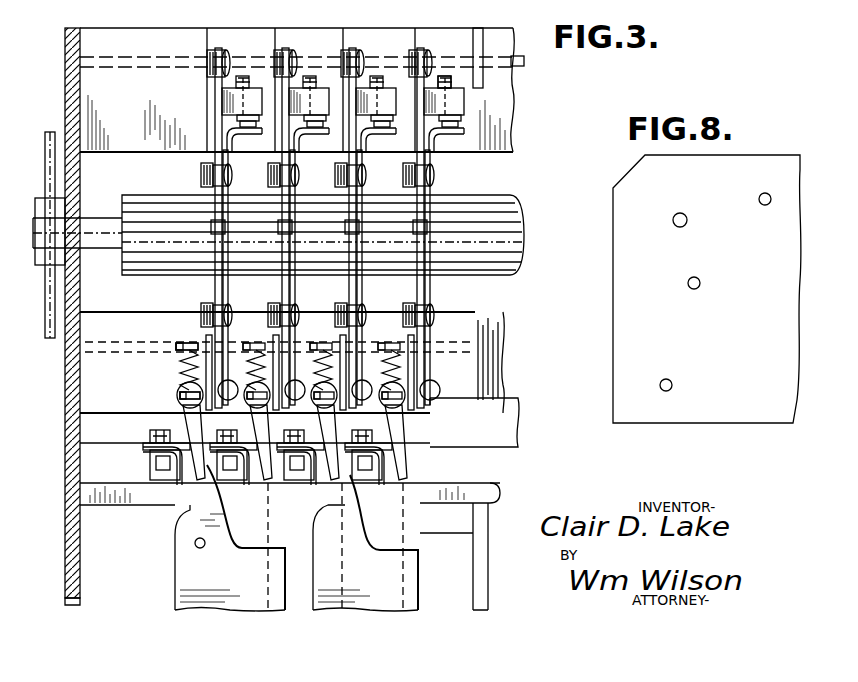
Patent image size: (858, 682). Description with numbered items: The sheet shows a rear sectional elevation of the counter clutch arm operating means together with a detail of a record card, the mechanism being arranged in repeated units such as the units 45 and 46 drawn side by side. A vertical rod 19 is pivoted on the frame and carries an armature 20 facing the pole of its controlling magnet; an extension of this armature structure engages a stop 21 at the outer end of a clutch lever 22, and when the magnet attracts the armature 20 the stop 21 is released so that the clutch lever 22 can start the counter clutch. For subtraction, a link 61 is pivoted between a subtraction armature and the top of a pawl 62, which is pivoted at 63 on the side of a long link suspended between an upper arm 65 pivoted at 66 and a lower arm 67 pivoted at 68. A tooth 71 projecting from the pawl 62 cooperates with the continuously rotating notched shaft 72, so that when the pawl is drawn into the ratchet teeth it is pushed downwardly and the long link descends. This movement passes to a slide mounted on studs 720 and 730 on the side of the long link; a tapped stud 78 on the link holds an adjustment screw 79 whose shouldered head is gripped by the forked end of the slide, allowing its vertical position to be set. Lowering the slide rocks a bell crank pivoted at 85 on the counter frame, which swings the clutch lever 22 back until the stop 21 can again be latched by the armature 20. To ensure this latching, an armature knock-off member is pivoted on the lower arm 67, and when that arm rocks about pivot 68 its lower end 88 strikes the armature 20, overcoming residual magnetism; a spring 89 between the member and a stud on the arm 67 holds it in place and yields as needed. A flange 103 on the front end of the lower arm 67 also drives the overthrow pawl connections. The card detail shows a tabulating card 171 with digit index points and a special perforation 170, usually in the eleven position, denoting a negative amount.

In FIG. 3, the vertical rod 19 is at (284, 592).
In FIG. 3, the armature 20 is at (180, 563).
In FIG. 3, the stop 21 is at (157, 458).
In FIG. 3, the clutch lever 22 is at (143, 445).
In FIG. 3, the column unit 45 is at (341, 38).
In FIG. 3, the column unit 46 is at (417, 38).
In FIG. 3, the link 61 is at (203, 172).
In FIG. 3, the pawl 62 is at (207, 285).
In FIG. 3, the pivot 63 is at (200, 318).
In FIG. 3, the upper arm 65 is at (210, 56).
In FIG. 3, the pivot rod 66 is at (524, 60).
In FIG. 3, the lower arm 67 is at (417, 410).
In FIG. 3, the pivot rod 68 is at (472, 347).
In FIG. 3, the tooth 71 is at (210, 230).
In FIG. 3, the notched shaft 72 is at (525, 206).
In FIG. 3, the tapped stud 78 is at (492, 101).
In FIG. 3, the adjustment screw 79 is at (524, 79).
In FIG. 3, the pivot 85 is at (178, 397).
In FIG. 3, the lower end 88 is at (410, 457).
In FIG. 3, the spring 89 is at (177, 357).
In FIG. 3, the flange 103 is at (175, 368).
In FIG. 8, the special perforation 170 is at (768, 193).
In FIG. 8, the tabulating card 171 is at (617, 248).
In FIG. 3, the stud 720 is at (451, 180).
In FIG. 3, the stud 730 is at (452, 307).